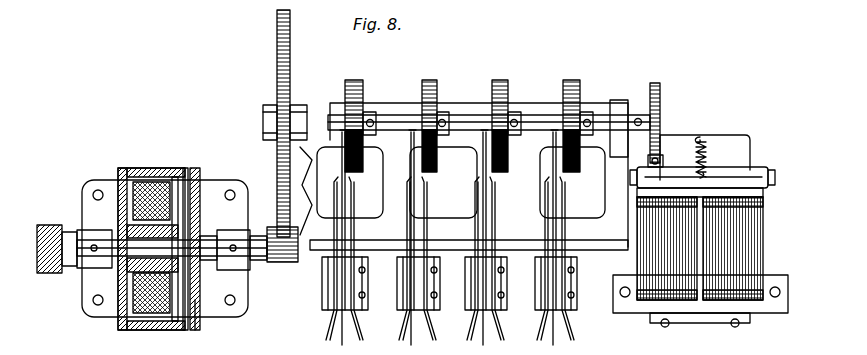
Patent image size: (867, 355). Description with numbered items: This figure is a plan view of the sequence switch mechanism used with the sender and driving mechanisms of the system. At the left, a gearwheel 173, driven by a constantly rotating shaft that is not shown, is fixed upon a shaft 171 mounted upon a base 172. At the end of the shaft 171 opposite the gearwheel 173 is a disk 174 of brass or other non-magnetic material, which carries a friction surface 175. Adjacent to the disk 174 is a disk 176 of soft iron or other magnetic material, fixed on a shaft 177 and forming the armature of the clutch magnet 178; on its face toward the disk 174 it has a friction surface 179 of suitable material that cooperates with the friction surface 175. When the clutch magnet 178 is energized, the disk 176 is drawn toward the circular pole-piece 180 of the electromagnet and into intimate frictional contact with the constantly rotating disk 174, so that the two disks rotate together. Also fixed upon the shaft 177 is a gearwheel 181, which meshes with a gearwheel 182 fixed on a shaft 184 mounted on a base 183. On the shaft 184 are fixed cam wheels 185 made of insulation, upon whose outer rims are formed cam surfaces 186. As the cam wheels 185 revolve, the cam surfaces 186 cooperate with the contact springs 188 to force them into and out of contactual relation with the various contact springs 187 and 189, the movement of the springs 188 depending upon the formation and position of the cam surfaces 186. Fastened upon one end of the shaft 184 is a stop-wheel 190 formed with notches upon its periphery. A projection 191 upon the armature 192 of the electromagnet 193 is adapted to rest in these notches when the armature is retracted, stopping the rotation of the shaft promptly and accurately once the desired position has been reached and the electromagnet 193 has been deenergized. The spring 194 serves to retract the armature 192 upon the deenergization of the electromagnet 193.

The shaft 171 is at (115, 248).
The base 172 is at (107, 312).
The gearwheel 173 is at (50, 274).
The disk 174 is at (186, 322).
The friction surface 175 is at (196, 311).
The disk 176 is at (197, 176).
The shaft 177 is at (260, 270).
The clutch magnet 178 is at (126, 174).
The friction surface 179 is at (180, 185).
The circular pole-piece 180 is at (150, 184).
The gearwheel 181 is at (288, 262).
The gearwheel 182 is at (289, 65).
The base 183 is at (305, 112).
The shaft 184 is at (400, 125).
The cam wheels 185 is at (360, 80).
The cam surfaces 186 is at (470, 90).
The contact springs 187 is at (333, 190).
The contact springs 188 is at (345, 180).
The contact springs 189 is at (352, 192).
The stop-wheel 190 is at (660, 99).
The projection 191 is at (657, 155).
The armature 192 is at (742, 177).
The electromagnet 193 is at (750, 245).
The spring 194 is at (707, 150).